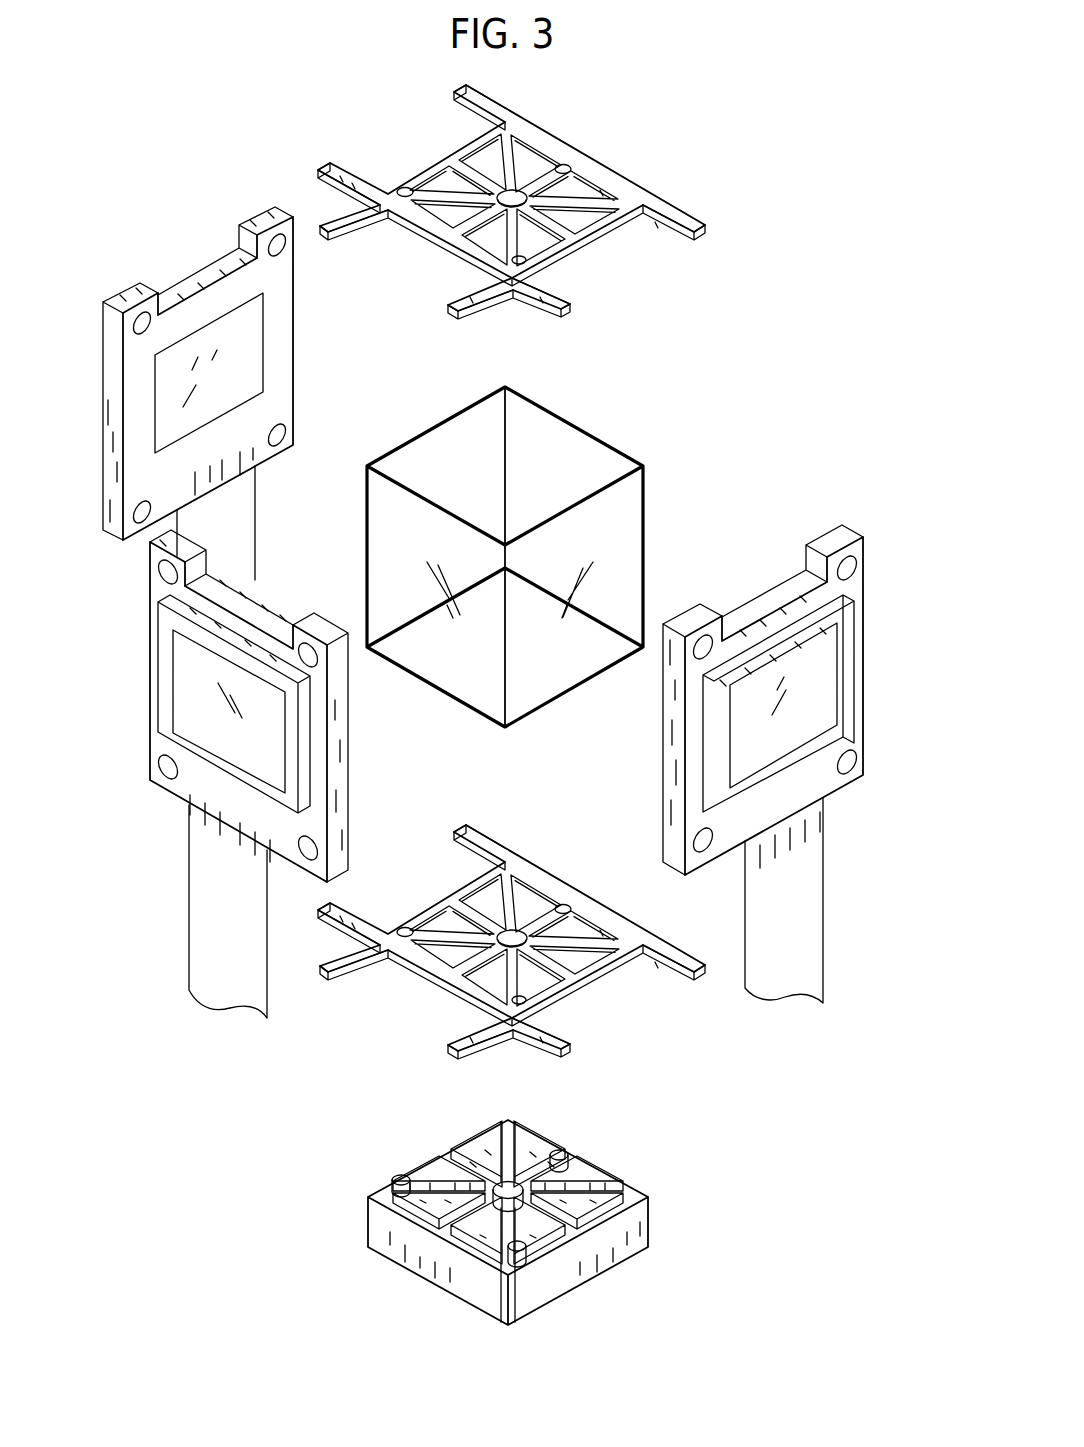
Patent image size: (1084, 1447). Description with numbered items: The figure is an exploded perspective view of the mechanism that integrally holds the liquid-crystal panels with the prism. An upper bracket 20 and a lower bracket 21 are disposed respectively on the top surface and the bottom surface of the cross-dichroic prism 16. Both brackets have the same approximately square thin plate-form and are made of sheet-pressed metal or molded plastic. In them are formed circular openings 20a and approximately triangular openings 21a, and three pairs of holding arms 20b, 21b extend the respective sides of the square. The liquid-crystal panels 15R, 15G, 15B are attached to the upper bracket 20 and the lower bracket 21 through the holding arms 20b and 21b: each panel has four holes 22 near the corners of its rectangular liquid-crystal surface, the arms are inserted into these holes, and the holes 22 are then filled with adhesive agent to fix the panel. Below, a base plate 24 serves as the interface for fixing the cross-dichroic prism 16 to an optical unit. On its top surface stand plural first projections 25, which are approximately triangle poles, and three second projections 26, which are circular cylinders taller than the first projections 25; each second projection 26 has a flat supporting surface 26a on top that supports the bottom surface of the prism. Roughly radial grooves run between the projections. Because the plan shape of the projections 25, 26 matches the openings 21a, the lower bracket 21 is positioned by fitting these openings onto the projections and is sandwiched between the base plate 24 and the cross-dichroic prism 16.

The upper bracket 20 is at (592, 155).
The circular openings 20a is at (440, 183).
The holding arms 20b is at (489, 102).
The lower bracket 21 is at (540, 873).
The approximately triangular openings 21a is at (488, 893).
The holding arms 21b is at (476, 842).
The cross-dichroic prism 16 is at (573, 436).
The liquid-crystal panel 15R is at (186, 291).
The liquid-crystal panel 15G is at (211, 815).
The liquid-crystal panel 15B is at (803, 804).
The holes 22 is at (856, 568).
The base plate 24 is at (633, 1247).
The first projections 25 is at (488, 1257).
The second projections 26 is at (378, 1187).
The flat supporting surface 26a is at (398, 1178).